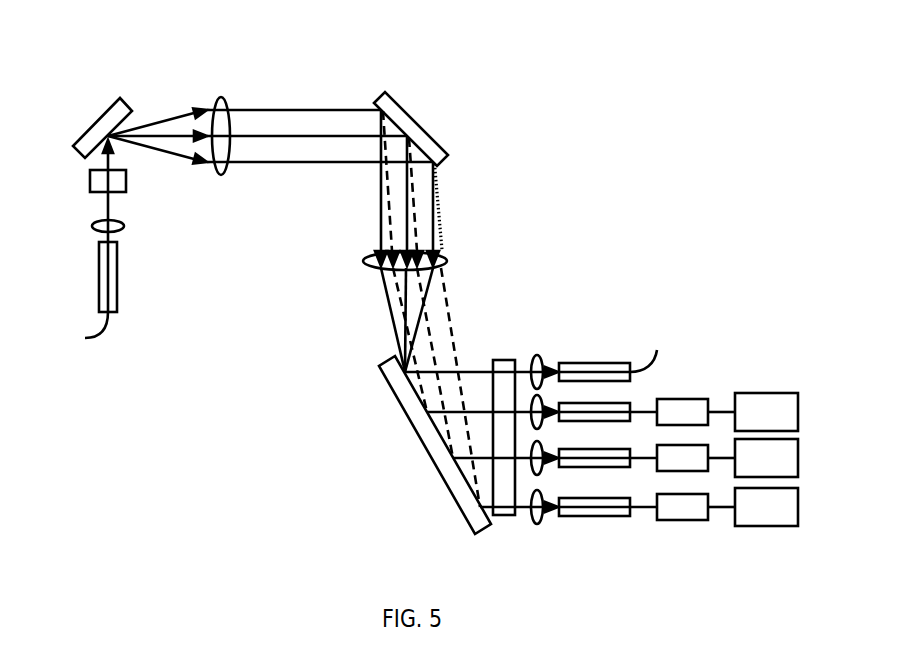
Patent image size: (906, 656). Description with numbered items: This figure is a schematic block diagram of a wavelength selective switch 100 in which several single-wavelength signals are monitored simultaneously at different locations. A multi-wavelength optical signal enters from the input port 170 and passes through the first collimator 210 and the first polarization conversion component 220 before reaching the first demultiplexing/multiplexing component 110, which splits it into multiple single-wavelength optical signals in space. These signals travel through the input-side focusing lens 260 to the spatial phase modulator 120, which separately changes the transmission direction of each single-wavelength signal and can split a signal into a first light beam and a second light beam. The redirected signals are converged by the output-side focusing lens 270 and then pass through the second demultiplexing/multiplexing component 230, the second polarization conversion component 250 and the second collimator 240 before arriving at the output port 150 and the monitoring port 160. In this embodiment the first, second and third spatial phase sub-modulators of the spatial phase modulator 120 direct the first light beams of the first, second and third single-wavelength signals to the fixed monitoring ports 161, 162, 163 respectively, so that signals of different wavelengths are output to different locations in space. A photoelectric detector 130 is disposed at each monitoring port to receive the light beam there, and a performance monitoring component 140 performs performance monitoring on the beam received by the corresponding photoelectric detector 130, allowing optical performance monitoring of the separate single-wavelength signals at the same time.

The wavelength selective switch 100 is at (656, 47).
The first demultiplexing/multiplexing component 110 is at (88, 108).
The spatial phase modulator 120 is at (421, 112).
The photoelectric detector 130 is at (696, 485).
The performance monitoring component 140 is at (766, 434).
The output port 150 is at (639, 343).
The monitoring port 160 is at (608, 474).
The fixed monitoring port 161 is at (608, 400).
The fixed monitoring port 162 is at (608, 445).
The fixed monitoring port 163 is at (608, 494).
The input port 170 is at (72, 290).
The first collimator 210 is at (75, 208).
The first polarization conversion component 220 is at (76, 166).
The second demultiplexing/multiplexing component 230 is at (406, 422).
The second collimator 240 is at (538, 439).
The second polarization conversion component 250 is at (489, 404).
The input-side focusing lens 260 is at (249, 112).
The output-side focusing lens 270 is at (379, 238).